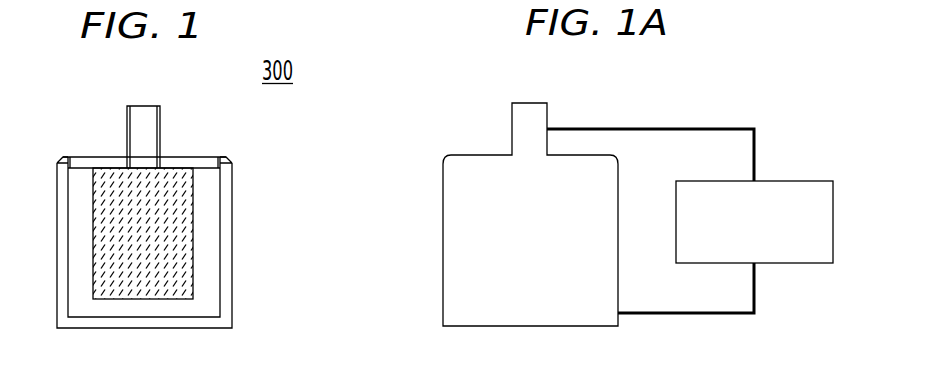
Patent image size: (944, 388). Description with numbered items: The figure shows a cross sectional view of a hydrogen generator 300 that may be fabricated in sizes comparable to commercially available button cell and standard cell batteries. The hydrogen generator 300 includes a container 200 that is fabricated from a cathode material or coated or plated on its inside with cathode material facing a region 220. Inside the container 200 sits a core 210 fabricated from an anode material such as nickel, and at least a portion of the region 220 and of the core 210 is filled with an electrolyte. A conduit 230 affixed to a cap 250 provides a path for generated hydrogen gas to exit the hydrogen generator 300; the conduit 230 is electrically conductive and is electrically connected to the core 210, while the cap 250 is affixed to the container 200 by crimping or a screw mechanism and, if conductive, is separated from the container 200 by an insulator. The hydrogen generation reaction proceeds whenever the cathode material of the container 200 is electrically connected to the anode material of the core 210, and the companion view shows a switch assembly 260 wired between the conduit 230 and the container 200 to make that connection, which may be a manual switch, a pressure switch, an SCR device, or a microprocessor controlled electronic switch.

In FIG. 1, the container 200 is at (233, 240).
In FIG. 1, the core 210 is at (100, 278).
In FIG. 1, the region 220 is at (208, 297).
In FIG. 1, the conduit 230 is at (160, 126).
In FIG. 1, the cap 250 is at (108, 157).
In FIG. 1A, the switch assembly 260 is at (836, 213).
In FIG. 1A, the hydrogen generator 300 is at (443, 252).